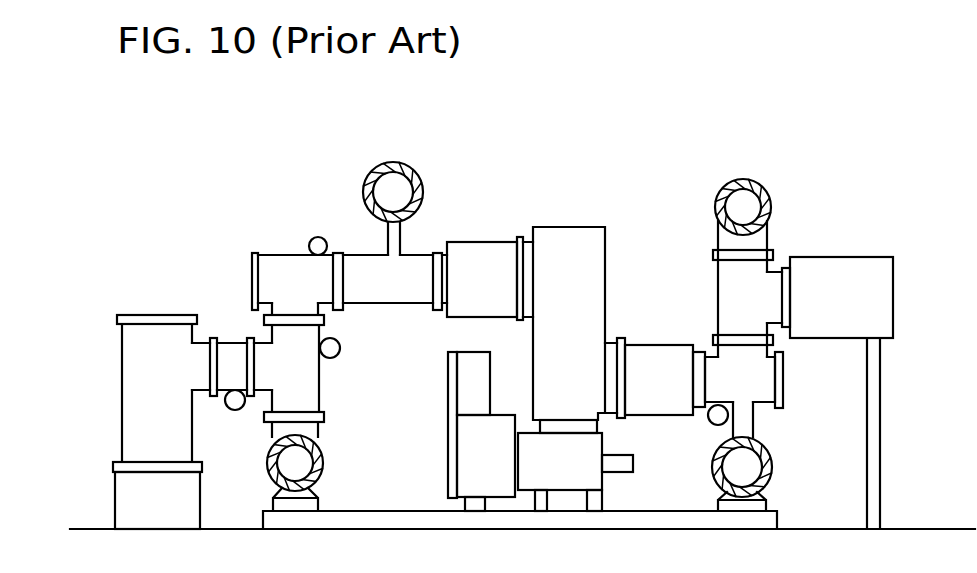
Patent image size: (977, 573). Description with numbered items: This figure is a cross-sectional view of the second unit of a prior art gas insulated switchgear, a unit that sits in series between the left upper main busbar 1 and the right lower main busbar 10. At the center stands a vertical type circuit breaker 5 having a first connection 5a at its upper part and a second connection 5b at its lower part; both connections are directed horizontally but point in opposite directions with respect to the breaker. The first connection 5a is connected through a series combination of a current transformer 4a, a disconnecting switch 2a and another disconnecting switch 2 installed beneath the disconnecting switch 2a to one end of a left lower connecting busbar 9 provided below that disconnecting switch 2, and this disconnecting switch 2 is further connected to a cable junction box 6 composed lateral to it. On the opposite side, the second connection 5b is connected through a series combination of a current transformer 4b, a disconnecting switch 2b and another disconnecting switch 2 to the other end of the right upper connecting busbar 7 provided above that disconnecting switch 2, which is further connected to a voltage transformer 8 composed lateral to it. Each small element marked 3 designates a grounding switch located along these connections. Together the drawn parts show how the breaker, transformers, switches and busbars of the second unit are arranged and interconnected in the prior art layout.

The left upper main busbar 1 is at (408, 176).
The disconnecting switch 2 is at (320, 390).
The disconnecting switch 2a is at (273, 254).
The disconnecting switch 2b is at (784, 396).
The grounding switch 3 is at (318, 237).
The current transformer 4a is at (475, 242).
The current transformer 4b is at (670, 345).
The vertical type circuit breaker 5 is at (590, 227).
The first connection 5a is at (518, 290).
The second connection 5b is at (620, 338).
The cable junction box 6 is at (121, 417).
The right upper connecting busbar 7 is at (772, 220).
The voltage transformer 8 is at (893, 300).
The left lower connecting busbar 9 is at (322, 476).
The right lower main busbar 10 is at (771, 483).